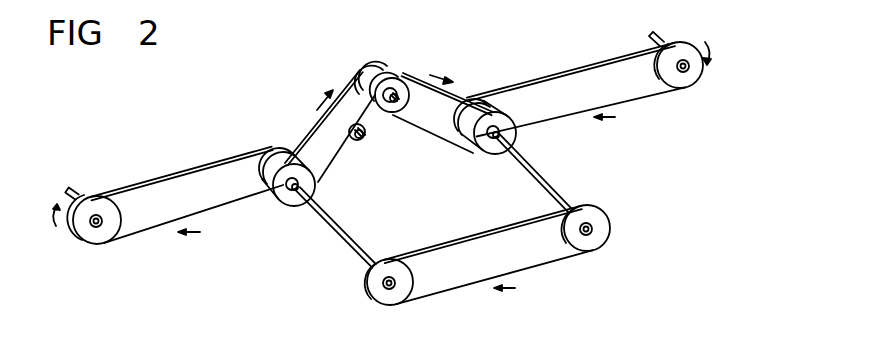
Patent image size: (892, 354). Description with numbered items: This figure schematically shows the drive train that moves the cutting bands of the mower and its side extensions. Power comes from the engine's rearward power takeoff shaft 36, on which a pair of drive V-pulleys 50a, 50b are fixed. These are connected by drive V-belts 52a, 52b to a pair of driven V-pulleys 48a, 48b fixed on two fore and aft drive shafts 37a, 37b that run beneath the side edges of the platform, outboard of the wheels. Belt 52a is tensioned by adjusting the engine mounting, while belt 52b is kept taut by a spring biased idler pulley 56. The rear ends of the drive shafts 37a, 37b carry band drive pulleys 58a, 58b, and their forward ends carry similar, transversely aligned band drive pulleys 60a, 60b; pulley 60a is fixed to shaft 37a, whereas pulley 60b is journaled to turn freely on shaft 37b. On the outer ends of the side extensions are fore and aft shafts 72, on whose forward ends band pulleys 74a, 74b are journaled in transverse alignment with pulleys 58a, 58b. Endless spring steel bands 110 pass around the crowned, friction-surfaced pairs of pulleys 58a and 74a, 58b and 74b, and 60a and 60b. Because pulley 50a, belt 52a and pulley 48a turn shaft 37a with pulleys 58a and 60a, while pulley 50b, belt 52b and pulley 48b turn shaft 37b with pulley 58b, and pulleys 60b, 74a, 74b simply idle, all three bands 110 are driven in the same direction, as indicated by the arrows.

The power takeoff shaft 36 is at (402, 98).
The drive shaft 37a is at (557, 184).
The drive shaft 37b is at (347, 246).
The driven V-pulley 48a is at (518, 137).
The driven V-pulley 48b is at (286, 204).
The drive V-pulley 50a is at (425, 80).
The drive V-pulley 50b is at (376, 60).
The drive V-belt 52a is at (440, 131).
The drive V-belt 52b is at (312, 130).
The spring biased idler pulley 56 is at (357, 143).
The band drive pulley 58a is at (520, 96).
The band drive pulley 58b is at (258, 172).
The band drive pulley 60a is at (605, 236).
The band drive pulley 60b is at (383, 303).
The fore and aft shaft 72 is at (78, 184).
The band pulley 74a is at (683, 87).
The band pulley 74b is at (88, 238).
The endless moving band 110 is at (183, 165).